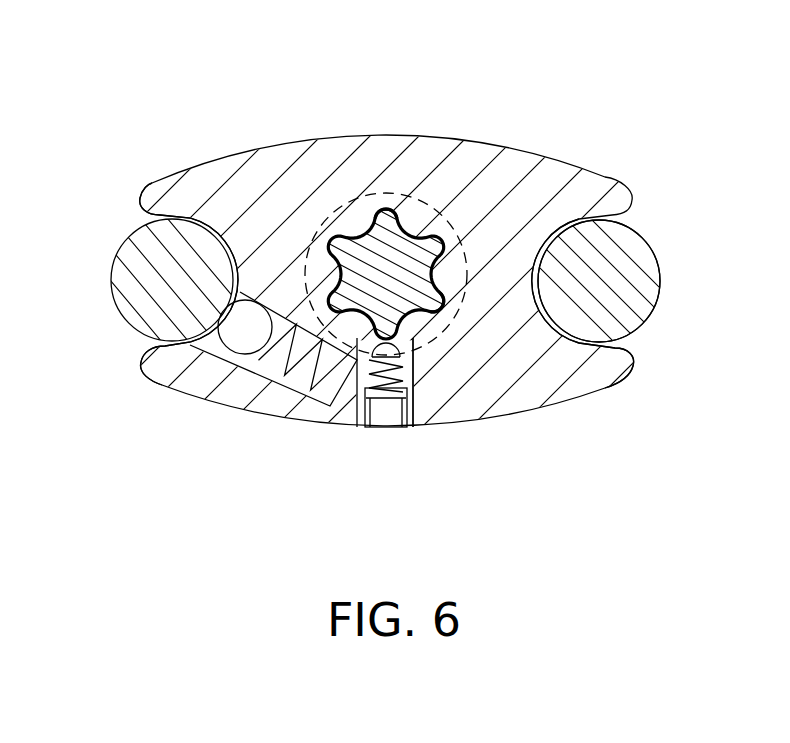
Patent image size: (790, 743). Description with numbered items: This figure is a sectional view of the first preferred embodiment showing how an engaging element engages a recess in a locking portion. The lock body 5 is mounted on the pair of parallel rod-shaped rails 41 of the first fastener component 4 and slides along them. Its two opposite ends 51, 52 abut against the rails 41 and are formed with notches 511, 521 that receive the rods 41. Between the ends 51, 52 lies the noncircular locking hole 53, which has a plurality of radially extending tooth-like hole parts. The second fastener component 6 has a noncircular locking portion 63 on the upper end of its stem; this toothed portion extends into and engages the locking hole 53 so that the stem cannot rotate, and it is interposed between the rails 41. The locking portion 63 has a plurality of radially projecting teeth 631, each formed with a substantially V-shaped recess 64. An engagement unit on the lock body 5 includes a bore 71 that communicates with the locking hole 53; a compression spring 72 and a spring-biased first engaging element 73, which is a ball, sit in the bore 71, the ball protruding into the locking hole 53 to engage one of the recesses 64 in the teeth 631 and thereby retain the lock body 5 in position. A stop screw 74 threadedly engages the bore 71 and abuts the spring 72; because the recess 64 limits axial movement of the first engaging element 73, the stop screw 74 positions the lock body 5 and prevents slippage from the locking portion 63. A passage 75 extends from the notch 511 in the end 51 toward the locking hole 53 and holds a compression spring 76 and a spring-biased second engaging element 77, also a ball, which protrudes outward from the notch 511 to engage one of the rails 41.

The first fastener component 4 is at (652, 240).
The rails 41 is at (135, 278).
The lock body 5 is at (565, 152).
The end 51 is at (176, 388).
The notch 511 is at (158, 323).
The end 52 is at (595, 392).
The notch 521 is at (565, 332).
The locking hole 53 is at (315, 312).
The second fastener component 6 is at (332, 204).
The locking portion 63 is at (433, 240).
The teeth 631 is at (465, 238).
The recess 64 is at (412, 175).
The bore 71 is at (362, 350).
The spring 72 is at (405, 366).
The first engaging element 73 is at (462, 352).
The stop screw 74 is at (386, 412).
The passage 75 is at (296, 388).
The spring 76 is at (276, 356).
The second engaging element 77 is at (232, 332).